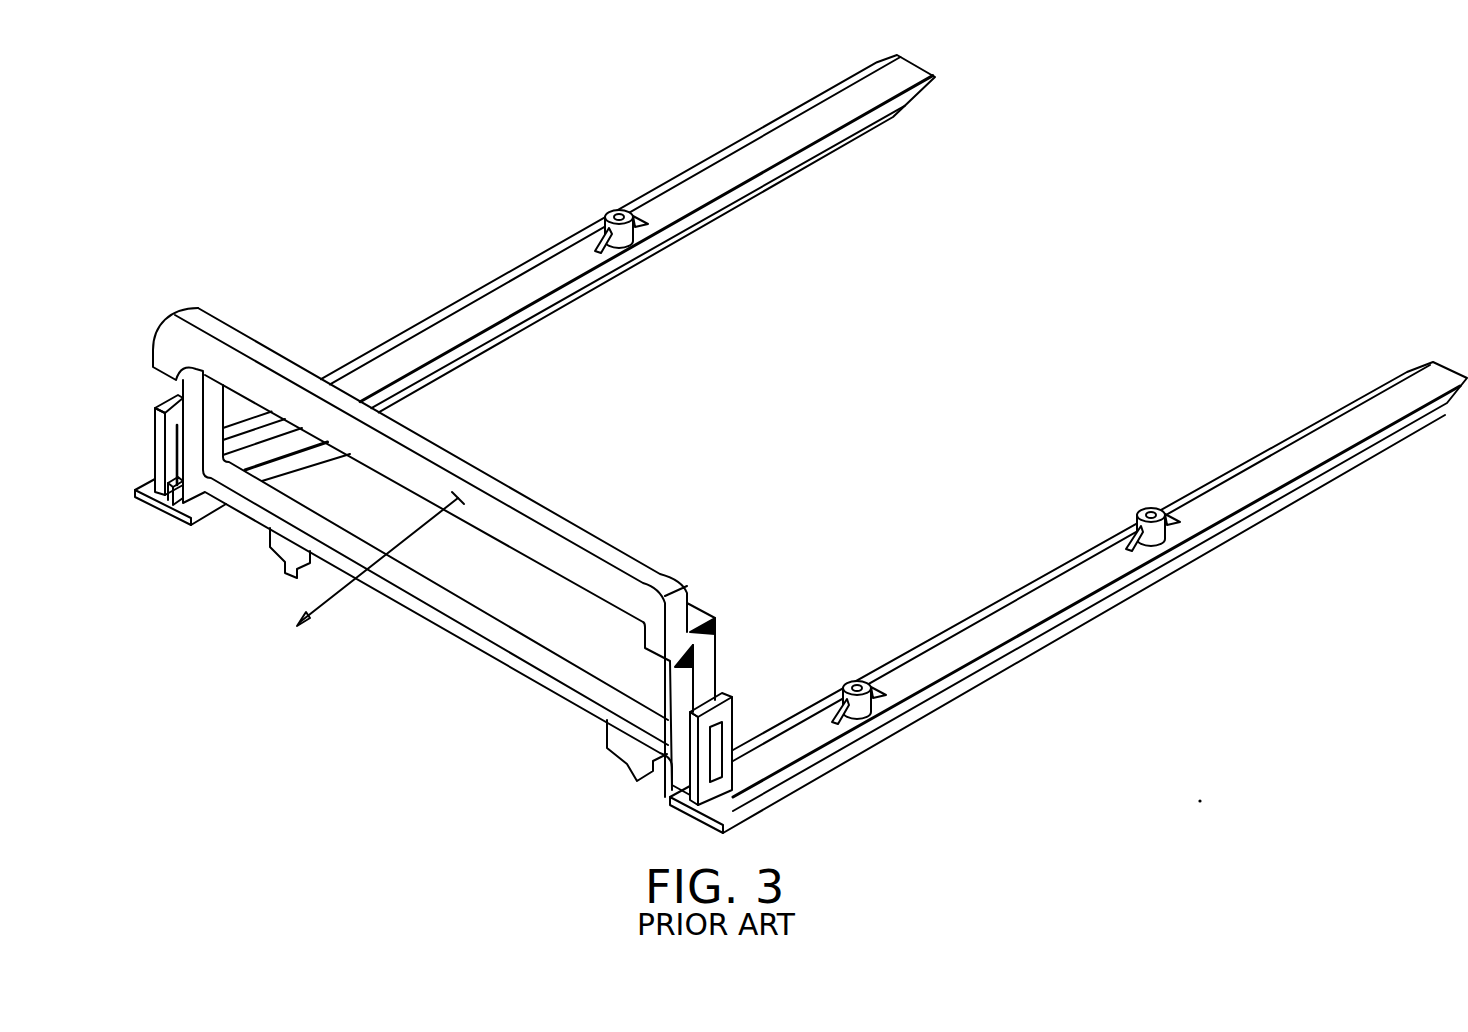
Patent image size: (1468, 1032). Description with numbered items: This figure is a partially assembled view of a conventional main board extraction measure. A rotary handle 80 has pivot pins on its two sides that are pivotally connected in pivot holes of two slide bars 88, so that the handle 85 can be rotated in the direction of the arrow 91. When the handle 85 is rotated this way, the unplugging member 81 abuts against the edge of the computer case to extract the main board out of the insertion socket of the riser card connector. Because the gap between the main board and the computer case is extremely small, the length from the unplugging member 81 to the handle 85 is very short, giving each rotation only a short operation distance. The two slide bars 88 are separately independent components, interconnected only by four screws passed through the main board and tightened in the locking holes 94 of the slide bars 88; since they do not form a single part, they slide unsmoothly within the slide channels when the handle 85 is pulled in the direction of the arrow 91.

The rotary handle 80 is at (528, 474).
The unplugging member 81 is at (276, 558).
The handle 85 is at (600, 548).
The slide bar 88 is at (793, 151).
The arrow 91 is at (334, 588).
The locking hole 94 is at (618, 208).